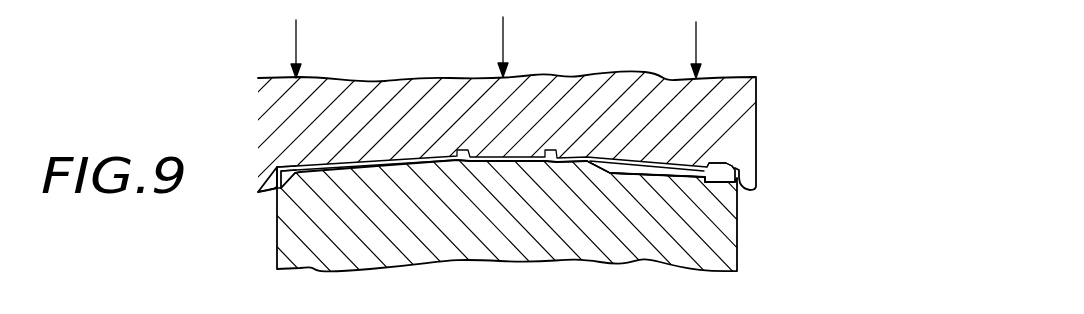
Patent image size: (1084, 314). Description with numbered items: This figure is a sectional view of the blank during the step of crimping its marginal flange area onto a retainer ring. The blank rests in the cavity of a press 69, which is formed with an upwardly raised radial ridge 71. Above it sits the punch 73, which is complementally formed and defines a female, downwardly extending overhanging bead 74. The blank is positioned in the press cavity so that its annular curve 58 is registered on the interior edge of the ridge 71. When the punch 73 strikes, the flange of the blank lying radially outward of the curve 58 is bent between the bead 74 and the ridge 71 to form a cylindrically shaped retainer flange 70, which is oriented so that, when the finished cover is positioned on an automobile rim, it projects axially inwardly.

The annular curve 58 is at (299, 168).
The press 69 is at (750, 242).
The retainer flange 70 is at (272, 170).
The radial ridge 71 is at (738, 168).
The punch 73 is at (768, 107).
The overhanging bead 74 is at (263, 190).